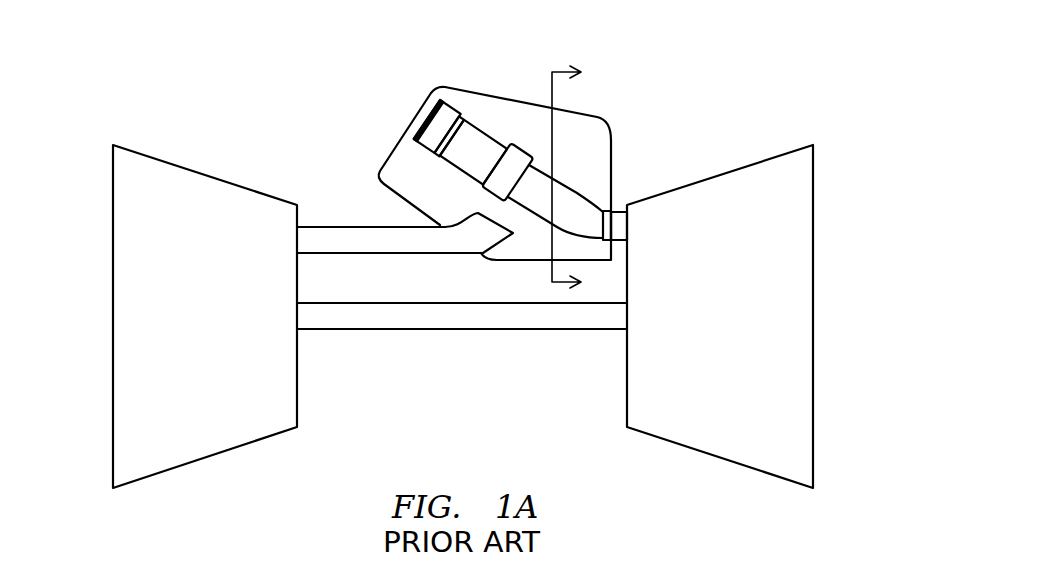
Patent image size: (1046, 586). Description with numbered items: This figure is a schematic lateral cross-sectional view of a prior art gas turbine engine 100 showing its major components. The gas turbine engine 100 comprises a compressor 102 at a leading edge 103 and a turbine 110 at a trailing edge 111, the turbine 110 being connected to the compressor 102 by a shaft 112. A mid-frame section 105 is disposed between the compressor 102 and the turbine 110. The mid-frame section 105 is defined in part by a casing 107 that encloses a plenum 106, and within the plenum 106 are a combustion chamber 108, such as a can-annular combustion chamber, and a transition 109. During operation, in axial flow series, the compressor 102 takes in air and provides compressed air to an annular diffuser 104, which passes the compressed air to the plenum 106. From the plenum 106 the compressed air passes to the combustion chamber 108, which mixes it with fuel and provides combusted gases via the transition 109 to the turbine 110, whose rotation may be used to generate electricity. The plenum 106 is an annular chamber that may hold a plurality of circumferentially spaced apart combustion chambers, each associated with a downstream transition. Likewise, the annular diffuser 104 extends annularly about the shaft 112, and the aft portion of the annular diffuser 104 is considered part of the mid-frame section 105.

The gas turbine engine 100 is at (292, 112).
The compressor 102 is at (232, 329).
The leading edge 103 is at (84, 328).
The annular diffuser 104 is at (375, 227).
The mid-frame section 105 is at (598, 48).
The plenum 106 is at (572, 135).
The casing 107 is at (568, 111).
The combustion chamber 108 is at (485, 132).
The transition 109 is at (577, 200).
The turbine 110 is at (743, 329).
The trailing edge 111 is at (895, 329).
The shaft 112 is at (485, 330).